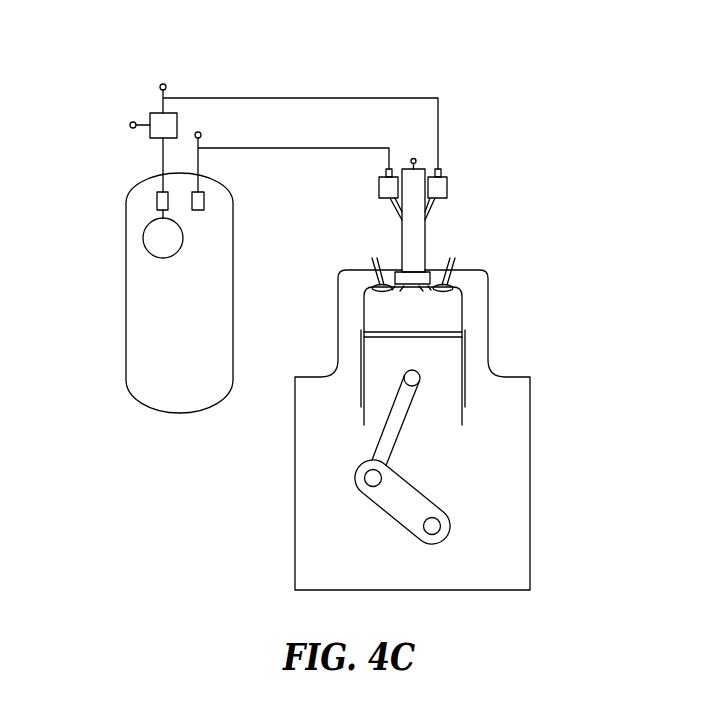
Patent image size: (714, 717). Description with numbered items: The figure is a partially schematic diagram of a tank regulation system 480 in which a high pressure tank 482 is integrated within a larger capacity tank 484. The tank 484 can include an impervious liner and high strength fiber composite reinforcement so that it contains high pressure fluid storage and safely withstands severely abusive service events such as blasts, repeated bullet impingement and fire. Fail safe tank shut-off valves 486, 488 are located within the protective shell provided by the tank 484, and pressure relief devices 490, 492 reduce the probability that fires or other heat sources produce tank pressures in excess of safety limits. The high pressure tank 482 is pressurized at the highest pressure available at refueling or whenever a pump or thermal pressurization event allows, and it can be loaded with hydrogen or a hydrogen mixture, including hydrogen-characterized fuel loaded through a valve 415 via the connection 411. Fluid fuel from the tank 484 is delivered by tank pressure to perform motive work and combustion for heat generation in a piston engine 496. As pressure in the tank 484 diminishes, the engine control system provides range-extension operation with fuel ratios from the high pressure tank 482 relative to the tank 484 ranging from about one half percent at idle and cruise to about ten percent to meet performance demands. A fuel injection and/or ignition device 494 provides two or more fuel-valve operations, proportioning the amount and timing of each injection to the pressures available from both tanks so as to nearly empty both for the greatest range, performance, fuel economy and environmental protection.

The tank regulation system 480 is at (589, 127).
The pressure relief device 490 is at (163, 84).
The valve 415 is at (158, 111).
The connection 411 is at (130, 125).
The pressure relief device 492 is at (201, 134).
The tank 484 is at (126, 323).
The fail safe tank shut-off valve 486 is at (157, 203).
The fail safe tank shut-off valve 488 is at (204, 203).
The high pressure tank 482 is at (143, 240).
The fuel injection and/or ignition device 494 is at (425, 240).
The piston engine 496 is at (518, 375).